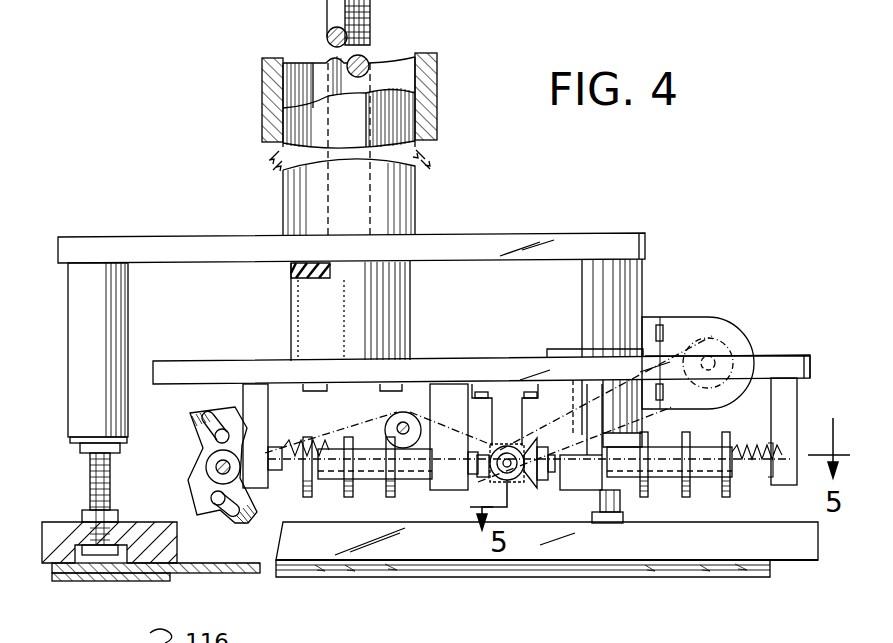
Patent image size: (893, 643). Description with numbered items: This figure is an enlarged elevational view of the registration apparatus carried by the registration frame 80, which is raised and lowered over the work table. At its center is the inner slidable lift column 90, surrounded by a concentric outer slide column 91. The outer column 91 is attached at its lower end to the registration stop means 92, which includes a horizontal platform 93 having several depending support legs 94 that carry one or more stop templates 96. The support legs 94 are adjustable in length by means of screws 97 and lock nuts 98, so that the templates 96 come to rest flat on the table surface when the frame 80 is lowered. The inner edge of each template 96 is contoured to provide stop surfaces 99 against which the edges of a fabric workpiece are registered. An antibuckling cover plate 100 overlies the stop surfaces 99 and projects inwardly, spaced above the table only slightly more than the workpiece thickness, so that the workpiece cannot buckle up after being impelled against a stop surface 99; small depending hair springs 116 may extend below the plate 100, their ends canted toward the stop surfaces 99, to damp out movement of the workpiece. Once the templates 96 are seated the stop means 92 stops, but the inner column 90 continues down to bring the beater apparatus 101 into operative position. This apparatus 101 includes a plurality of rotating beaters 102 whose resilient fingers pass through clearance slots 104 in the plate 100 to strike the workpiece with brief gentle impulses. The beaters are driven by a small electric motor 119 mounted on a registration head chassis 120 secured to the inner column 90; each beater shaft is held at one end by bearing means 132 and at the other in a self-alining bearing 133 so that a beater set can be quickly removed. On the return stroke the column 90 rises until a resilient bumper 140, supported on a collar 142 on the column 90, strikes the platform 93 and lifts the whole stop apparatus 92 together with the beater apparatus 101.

The registration frame 80 is at (135, 143).
The inner slidable lift column 90 is at (370, 36).
The outer slide column 91 is at (415, 200).
The registration stop means 92 is at (547, 218).
The horizontal platform 93 is at (590, 234).
The support legs 94 is at (84, 312).
The stop template 96 is at (84, 581).
The screw 97 is at (90, 483).
The lock nut 98 is at (80, 449).
The stop surface 99 is at (205, 580).
The antibuckling cover plate 100 is at (213, 576).
The beater apparatus 101 is at (498, 343).
The rotating beater 102 is at (200, 420).
The clearance slot 104 is at (320, 578).
The hair spring 116 is at (235, 577).
The electric motor 119 is at (712, 330).
The registration head chassis 120 is at (770, 356).
The bearing means 132 is at (581, 478).
The self-alining bearing 133 is at (791, 410).
The resilient bumper 140 is at (292, 271).
The collar 142 is at (410, 318).